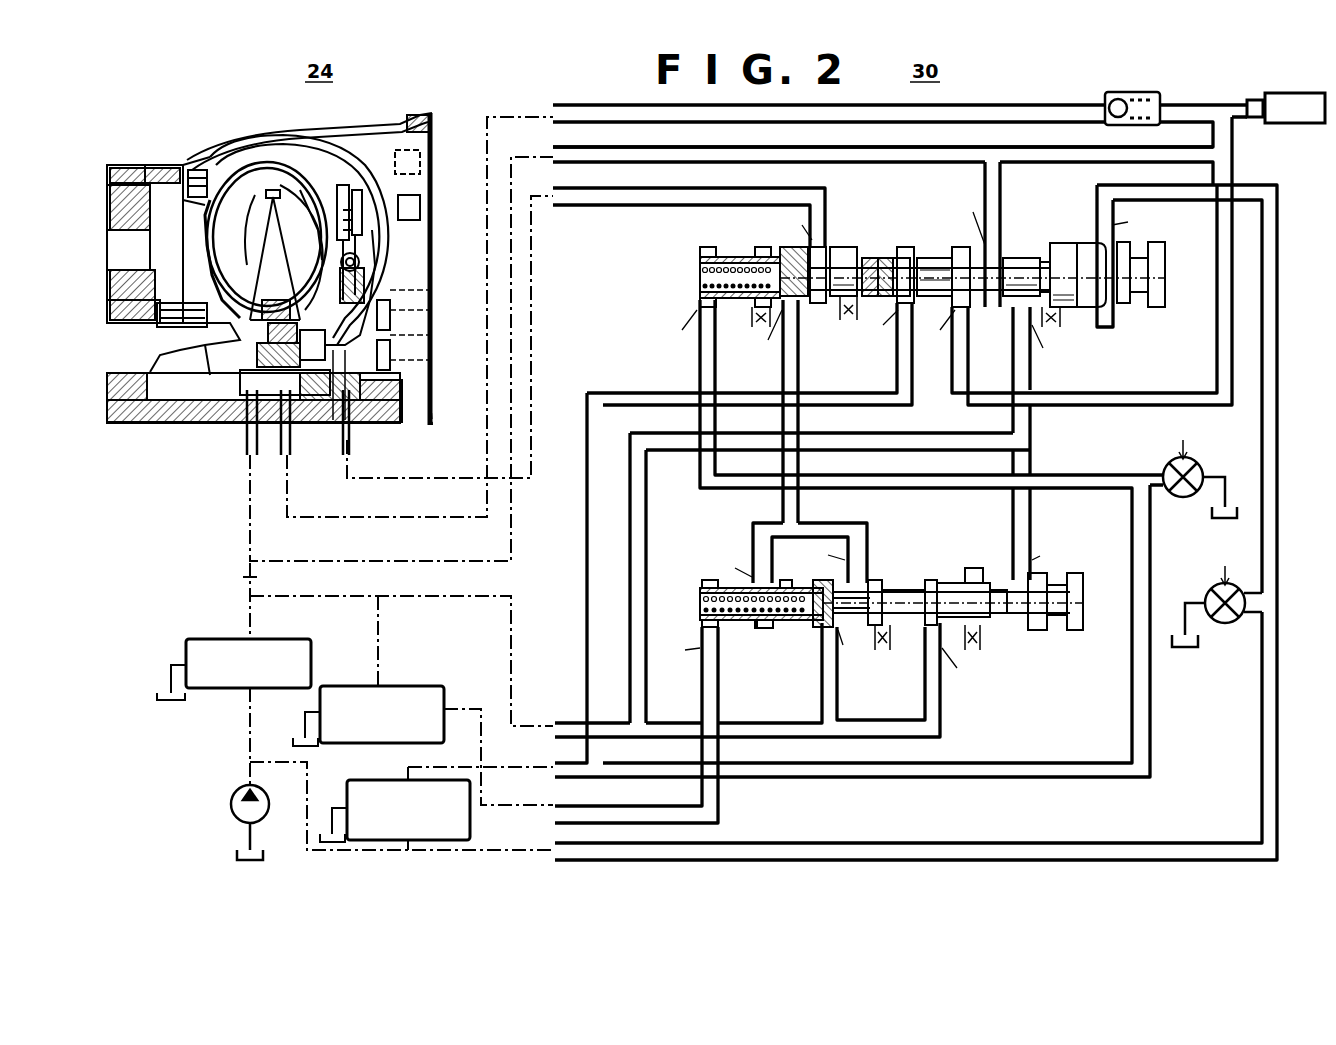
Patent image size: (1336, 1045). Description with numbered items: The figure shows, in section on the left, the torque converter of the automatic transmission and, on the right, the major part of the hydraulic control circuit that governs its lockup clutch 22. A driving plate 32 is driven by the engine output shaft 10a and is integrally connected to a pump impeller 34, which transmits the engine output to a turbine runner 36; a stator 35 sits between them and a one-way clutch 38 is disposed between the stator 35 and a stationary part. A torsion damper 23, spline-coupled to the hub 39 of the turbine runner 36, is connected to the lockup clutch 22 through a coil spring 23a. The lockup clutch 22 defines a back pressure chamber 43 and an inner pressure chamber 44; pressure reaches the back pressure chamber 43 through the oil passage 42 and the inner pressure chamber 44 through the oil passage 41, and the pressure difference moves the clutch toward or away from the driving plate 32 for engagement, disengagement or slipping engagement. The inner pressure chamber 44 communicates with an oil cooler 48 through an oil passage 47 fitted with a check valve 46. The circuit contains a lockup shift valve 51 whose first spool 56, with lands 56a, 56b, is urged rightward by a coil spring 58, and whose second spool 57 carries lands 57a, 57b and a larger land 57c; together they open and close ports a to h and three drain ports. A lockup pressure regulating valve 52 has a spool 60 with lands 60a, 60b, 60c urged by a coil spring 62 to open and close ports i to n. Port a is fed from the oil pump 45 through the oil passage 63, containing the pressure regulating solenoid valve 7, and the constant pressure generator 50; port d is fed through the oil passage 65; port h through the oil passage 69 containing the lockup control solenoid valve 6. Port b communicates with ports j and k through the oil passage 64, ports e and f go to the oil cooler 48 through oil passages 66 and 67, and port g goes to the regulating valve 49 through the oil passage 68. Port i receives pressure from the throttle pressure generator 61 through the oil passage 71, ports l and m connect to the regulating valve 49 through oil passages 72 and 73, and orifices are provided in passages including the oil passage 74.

The lockup control solenoid valve 6 is at (1227, 624).
The pressure regulating solenoid valve 7 is at (1198, 466).
The engine output shaft 10a is at (432, 400).
The lockup clutch 22 is at (395, 170).
The torsion damper 23 is at (365, 232).
The coil spring 23a is at (360, 262).
The driving plate 32 is at (360, 160).
The pump impeller 34 is at (240, 190).
The stator 35 is at (265, 285).
The turbine runner 36 is at (278, 188).
The one-way clutch 38 is at (248, 395).
The hub 39 is at (330, 395).
The oil passage 41 is at (248, 548).
The oil passage 42 is at (418, 478).
The back pressure chamber 43 is at (365, 295).
The inner pressure chamber 44 is at (293, 225).
The oil pump 45 is at (230, 812).
The check valve 46 is at (1148, 92).
The oil passage 47 is at (312, 517).
The oil cooler 48 is at (1285, 93).
The regulating valve 49 is at (288, 640).
The constant pressure generator 50 is at (358, 781).
The lockup shift valve 51 is at (908, 267).
The lockup pressure regulating valve 52 is at (870, 604).
The first spool 56 is at (835, 303).
The land 56a is at (782, 256).
The land 56b is at (843, 256).
The second spool 57 is at (1020, 312).
The land 57a is at (928, 256).
The land 57b is at (1020, 256).
The land 57c is at (1062, 243).
The coil spring 58 is at (700, 283).
The spool 60 is at (900, 580).
The land 60a is at (800, 628).
The land 60b is at (880, 630).
The land 60c is at (950, 583).
The throttle pressure generator 61 is at (432, 686).
The coil spring 62 is at (700, 600).
The oil passage 63 is at (698, 380).
The oil passage 64 is at (800, 380).
The oil passage 65 is at (610, 392).
The oil passage 66 is at (1020, 148).
The oil passage 67 is at (955, 378).
The oil passage 68 is at (1012, 440).
The oil passage 69 is at (1278, 268).
The oil passage 71 is at (720, 697).
The oil passage 72 is at (822, 708).
The oil passage 73 is at (942, 710).
The oil passage 74 is at (1033, 512).